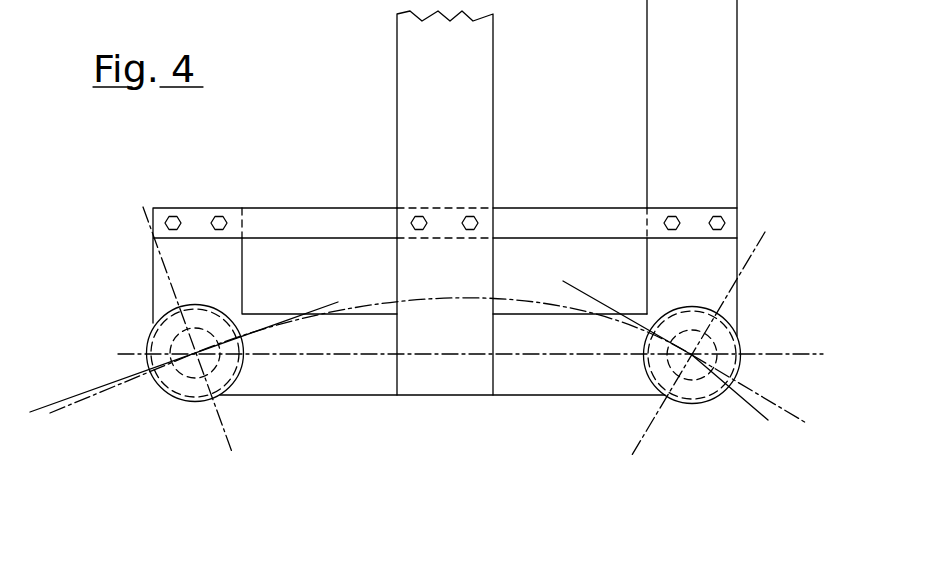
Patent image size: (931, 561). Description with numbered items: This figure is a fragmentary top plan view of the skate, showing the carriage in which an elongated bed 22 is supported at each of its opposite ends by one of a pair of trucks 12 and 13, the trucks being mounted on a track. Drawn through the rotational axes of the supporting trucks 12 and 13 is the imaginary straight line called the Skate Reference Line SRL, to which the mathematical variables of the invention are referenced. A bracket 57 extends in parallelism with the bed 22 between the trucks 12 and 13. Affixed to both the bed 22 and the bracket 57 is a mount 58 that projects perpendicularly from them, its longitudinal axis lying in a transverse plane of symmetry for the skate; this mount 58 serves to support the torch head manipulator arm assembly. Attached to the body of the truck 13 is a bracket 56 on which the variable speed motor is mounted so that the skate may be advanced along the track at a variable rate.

The truck 12 is at (135, 319).
The truck 13 is at (785, 340).
The elongated bed 22 is at (560, 395).
The bracket 56 is at (733, 116).
The bracket 57 is at (303, 215).
The mount 58 is at (485, 107).
The Skate Reference Line SRL is at (340, 360).